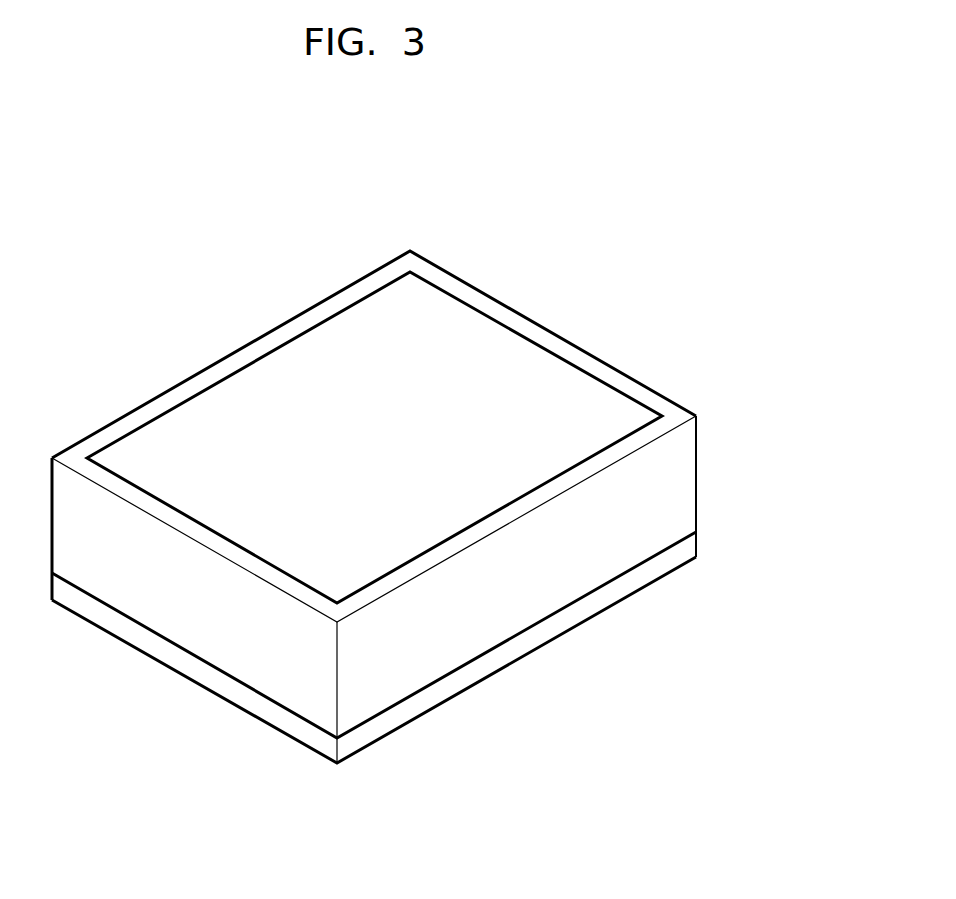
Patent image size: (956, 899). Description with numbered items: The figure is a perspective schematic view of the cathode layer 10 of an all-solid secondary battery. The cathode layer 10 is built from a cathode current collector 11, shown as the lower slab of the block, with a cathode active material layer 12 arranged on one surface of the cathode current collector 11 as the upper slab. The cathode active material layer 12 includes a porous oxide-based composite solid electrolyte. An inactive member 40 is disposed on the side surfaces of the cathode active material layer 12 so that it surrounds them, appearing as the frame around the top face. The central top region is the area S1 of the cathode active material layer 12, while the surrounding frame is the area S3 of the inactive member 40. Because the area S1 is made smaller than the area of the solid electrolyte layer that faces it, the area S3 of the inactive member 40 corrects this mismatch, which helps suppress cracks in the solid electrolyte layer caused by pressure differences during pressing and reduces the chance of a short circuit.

The cathode layer 10 is at (781, 427).
The cathode current collector 11 is at (685, 553).
The cathode active material layer 12 is at (617, 417).
The inactive member 40 is at (548, 340).
The area of the cathode active material layer S1 is at (222, 417).
The area of the inactive member S3 is at (128, 423).